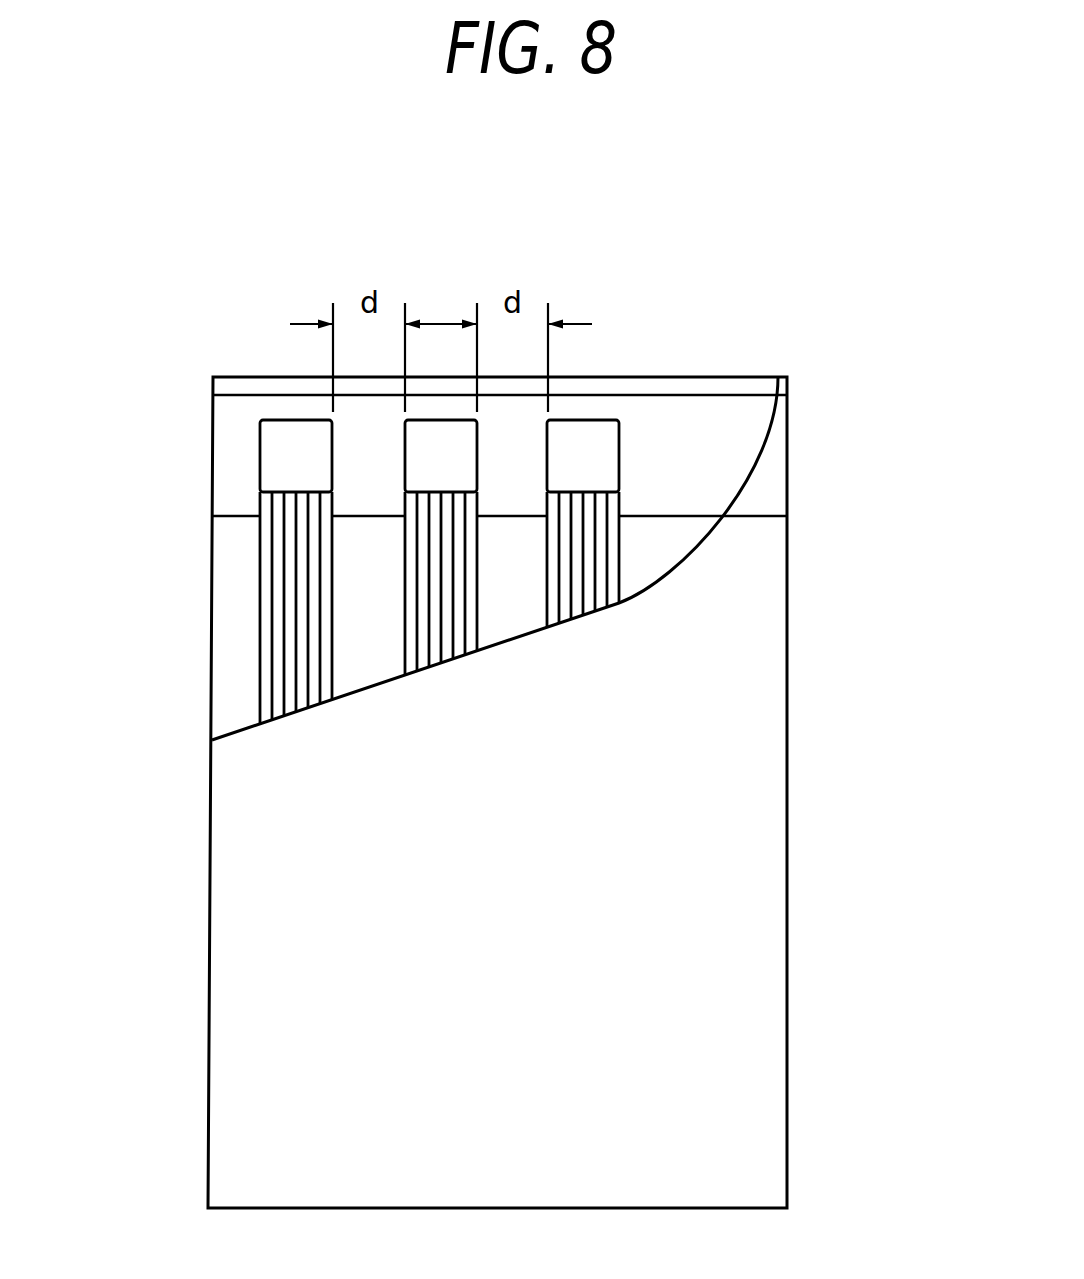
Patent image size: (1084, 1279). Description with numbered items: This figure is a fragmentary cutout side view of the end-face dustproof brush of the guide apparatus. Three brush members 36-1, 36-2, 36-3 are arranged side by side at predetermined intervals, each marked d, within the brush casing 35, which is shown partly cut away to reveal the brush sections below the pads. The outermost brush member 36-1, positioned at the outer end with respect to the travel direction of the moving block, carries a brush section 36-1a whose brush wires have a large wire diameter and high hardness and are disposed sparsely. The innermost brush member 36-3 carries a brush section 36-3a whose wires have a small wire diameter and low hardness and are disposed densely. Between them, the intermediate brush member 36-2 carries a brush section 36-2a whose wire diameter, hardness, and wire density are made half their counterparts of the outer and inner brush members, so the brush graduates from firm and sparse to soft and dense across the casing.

The brush casing 35 is at (707, 422).
The brush member 36-1 is at (280, 456).
The brush section 36-1a is at (270, 643).
The intermediate brush member 36-2 is at (443, 433).
The brush section 36-2a is at (447, 627).
The innermost brush member 36-3 is at (582, 433).
The brush section 36-3a is at (602, 560).